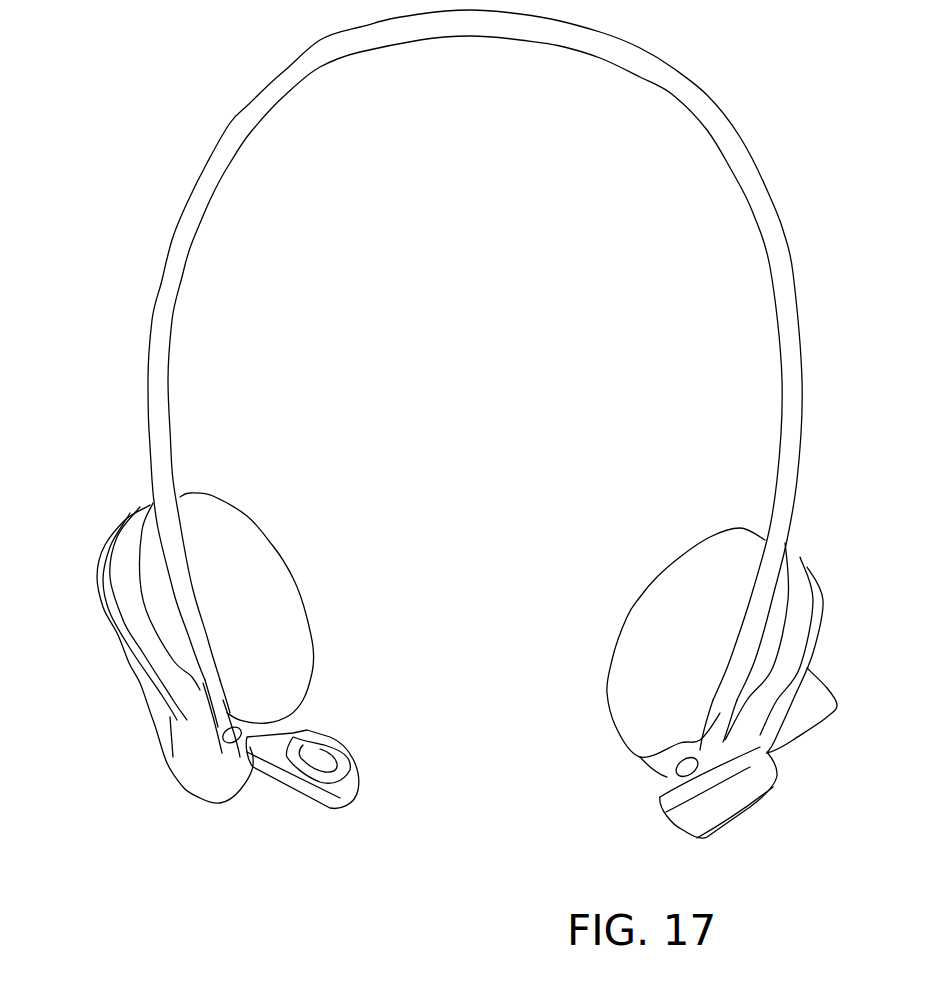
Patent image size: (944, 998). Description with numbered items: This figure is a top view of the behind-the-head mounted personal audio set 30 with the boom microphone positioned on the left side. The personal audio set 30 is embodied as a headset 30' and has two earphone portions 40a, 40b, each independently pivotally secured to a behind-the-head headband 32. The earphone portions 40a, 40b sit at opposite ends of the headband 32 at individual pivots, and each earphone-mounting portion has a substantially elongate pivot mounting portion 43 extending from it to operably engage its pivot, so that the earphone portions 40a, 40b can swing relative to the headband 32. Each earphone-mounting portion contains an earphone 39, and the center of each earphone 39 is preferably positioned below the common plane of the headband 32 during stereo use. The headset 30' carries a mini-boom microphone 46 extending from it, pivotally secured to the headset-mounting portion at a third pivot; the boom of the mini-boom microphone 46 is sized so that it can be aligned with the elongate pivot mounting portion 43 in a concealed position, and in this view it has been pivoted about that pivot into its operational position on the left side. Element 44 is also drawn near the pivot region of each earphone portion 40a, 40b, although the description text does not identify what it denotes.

The behind-the-head mounted personal audio set 30 is at (111, 800).
The headset 30' is at (147, 654).
The behind-the-head headband 32 is at (353, 47).
The earphone 39 is at (268, 588).
The earphone portion 40a is at (117, 650).
The earphone portion 40b is at (807, 670).
The substantially elongate pivot mounting portion 43 is at (150, 720).
The pivot 44 is at (220, 703).
The mini-boom microphone 46 is at (343, 798).